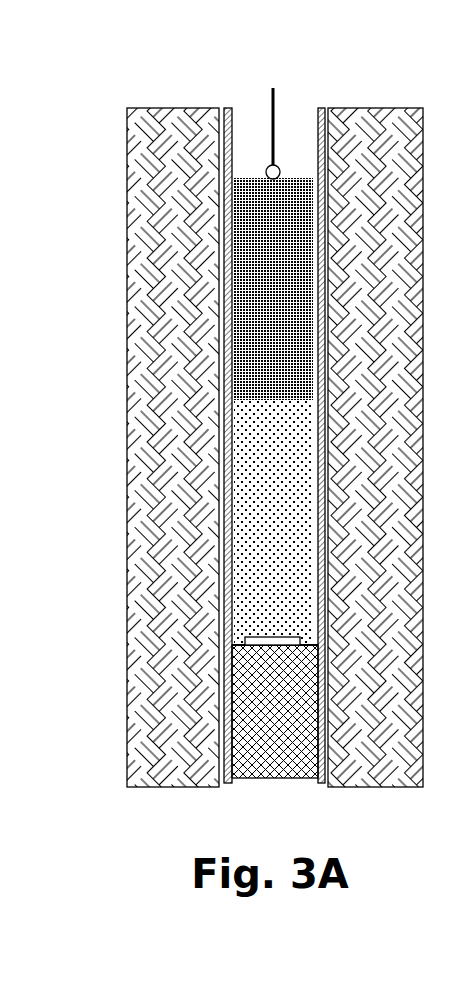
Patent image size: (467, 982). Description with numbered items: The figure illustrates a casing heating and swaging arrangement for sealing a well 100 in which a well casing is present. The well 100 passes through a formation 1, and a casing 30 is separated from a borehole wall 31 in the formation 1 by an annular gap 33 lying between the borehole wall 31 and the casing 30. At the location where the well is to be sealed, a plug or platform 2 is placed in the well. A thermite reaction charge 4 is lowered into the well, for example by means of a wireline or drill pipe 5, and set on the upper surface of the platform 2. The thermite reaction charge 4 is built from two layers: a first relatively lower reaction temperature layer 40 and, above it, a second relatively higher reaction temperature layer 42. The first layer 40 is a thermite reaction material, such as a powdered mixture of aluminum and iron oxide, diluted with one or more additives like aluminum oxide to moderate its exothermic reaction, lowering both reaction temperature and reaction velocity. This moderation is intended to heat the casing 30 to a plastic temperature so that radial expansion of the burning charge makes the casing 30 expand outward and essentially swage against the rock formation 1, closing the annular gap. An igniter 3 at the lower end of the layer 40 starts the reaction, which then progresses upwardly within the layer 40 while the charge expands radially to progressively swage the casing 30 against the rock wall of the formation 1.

The well 100 is at (378, 92).
The formation 1 is at (127, 208).
The plug or platform 2 is at (278, 778).
The igniter 3 is at (260, 673).
The thermite reaction charge 4 is at (252, 137).
The wireline or drill pipe 5 is at (274, 89).
The casing 30 is at (251, 445).
The borehole wall 31 is at (226, 108).
The annular gap 33 is at (327, 108).
The first relatively lower reaction temperature layer 40 is at (240, 502).
The second relatively higher reaction temperature layer 42 is at (242, 262).